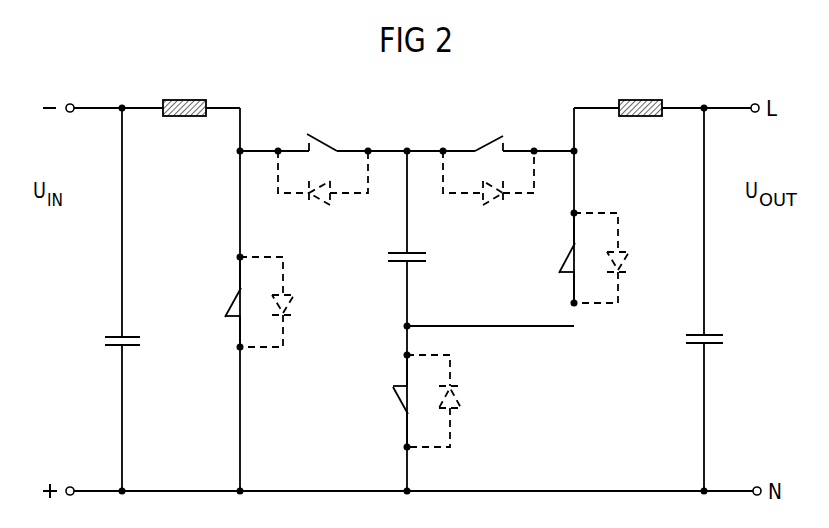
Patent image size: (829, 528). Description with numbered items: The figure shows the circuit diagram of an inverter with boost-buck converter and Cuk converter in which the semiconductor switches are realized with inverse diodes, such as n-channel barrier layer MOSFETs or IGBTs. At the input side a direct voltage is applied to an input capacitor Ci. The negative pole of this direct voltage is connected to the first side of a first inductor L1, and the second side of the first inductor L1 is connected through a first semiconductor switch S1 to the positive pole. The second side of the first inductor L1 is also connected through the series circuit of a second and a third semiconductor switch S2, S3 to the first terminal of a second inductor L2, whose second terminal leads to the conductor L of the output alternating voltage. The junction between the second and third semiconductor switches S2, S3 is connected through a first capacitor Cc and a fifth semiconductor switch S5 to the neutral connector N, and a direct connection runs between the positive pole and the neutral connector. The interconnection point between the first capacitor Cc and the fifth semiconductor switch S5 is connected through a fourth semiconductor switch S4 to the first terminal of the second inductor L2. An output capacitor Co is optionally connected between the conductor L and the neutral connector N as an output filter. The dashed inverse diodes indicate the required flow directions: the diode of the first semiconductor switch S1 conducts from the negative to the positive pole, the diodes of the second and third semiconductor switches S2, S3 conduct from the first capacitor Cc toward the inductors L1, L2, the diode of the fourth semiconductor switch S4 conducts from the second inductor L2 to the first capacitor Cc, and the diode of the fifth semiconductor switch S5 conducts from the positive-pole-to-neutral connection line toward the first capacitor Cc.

The first inductor L1 is at (184, 93).
The second inductor L2 is at (640, 93).
The first semiconductor switch S1 is at (246, 302).
The second semiconductor switch S2 is at (323, 155).
The third semiconductor switch S3 is at (488, 155).
The fourth semiconductor switch S4 is at (581, 258).
The fifth semiconductor switch S5 is at (413, 401).
The input capacitor Ci is at (110, 343).
The first capacitor Cc is at (392, 259).
The output capacitor Co is at (689, 341).